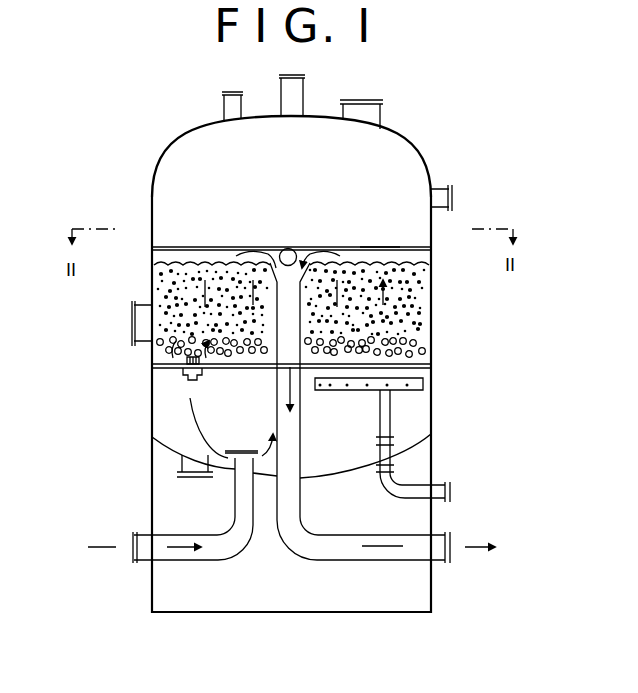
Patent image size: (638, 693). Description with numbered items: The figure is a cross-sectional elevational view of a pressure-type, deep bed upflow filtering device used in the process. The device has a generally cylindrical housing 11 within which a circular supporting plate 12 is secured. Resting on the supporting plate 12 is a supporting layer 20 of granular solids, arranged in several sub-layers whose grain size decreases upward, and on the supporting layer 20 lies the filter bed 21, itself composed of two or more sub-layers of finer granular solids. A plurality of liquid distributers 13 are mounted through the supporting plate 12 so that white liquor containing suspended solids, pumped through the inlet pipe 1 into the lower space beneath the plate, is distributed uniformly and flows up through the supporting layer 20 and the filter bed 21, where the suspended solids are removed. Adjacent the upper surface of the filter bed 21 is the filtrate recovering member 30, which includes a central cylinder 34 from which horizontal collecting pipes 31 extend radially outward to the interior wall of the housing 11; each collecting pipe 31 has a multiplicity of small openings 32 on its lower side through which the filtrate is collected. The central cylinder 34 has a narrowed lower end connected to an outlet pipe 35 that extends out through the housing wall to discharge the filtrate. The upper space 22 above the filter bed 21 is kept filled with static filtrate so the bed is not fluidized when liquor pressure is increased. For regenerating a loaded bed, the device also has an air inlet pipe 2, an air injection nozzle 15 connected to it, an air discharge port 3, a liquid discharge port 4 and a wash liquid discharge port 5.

The inlet pipe 1 is at (183, 562).
The air inlet pipe 2 is at (402, 498).
The air discharge port 3 is at (222, 109).
The liquid discharge port 4 is at (438, 210).
The wash liquid discharge port 5 is at (303, 92).
The housing 11 is at (152, 406).
The supporting plate 12 is at (431, 370).
The liquid distributer 13 is at (202, 370).
The air injection nozzle 15 is at (423, 391).
The supporting layer 20 is at (437, 339).
The filter bed 21 is at (437, 335).
The upper space 22 is at (305, 181).
The filtrate recovering member 30 is at (183, 243).
The collecting pipe 31 is at (379, 247).
The small opening 32 is at (205, 261).
The central cylinder 34 is at (310, 270).
The outlet pipe 35 is at (372, 561).